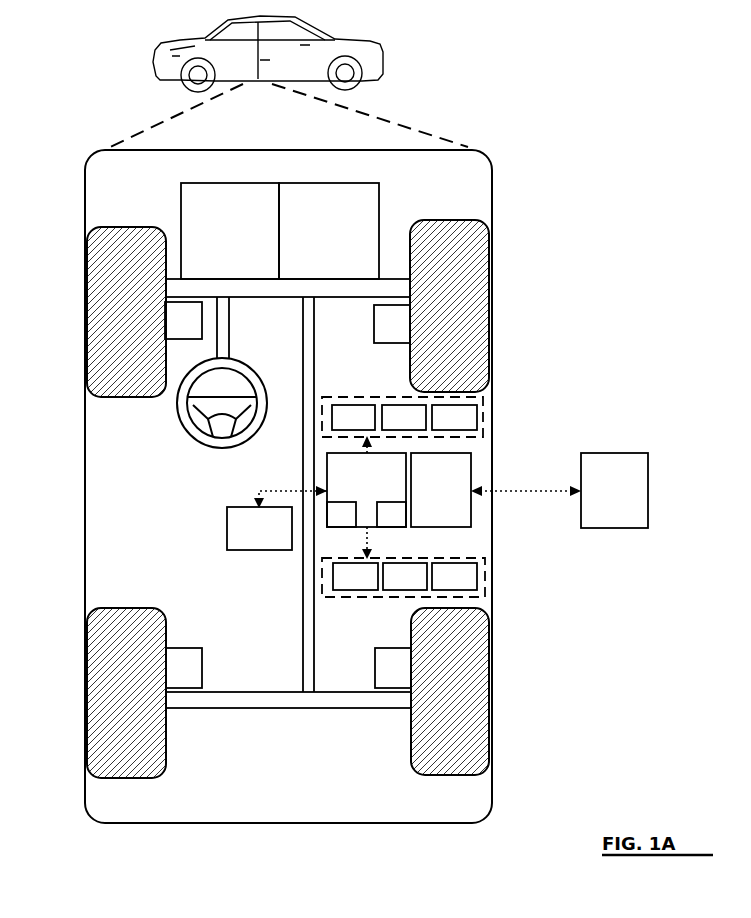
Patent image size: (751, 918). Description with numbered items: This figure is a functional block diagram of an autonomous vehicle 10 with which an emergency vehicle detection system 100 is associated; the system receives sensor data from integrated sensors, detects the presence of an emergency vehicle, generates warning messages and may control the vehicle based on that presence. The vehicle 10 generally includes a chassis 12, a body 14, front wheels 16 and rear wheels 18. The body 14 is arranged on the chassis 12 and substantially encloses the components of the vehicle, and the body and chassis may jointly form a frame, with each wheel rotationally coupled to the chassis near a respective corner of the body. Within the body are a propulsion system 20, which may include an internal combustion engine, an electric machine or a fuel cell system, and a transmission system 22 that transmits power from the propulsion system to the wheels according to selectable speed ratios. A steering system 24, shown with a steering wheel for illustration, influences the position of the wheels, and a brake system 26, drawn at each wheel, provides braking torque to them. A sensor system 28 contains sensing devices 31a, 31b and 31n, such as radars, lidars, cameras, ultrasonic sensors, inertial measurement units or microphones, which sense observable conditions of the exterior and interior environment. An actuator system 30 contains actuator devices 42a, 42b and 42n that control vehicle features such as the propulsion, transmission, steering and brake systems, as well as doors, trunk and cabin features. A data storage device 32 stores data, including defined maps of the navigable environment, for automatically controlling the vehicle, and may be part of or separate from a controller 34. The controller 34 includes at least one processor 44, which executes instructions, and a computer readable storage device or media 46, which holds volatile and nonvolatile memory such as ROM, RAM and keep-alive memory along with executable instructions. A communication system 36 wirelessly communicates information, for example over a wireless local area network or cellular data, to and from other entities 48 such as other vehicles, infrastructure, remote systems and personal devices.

The vehicle 10 is at (155, 66).
The emergency vehicle detection system 100 is at (508, 172).
The body 14 is at (85, 470).
The chassis 12 is at (303, 630).
The front wheels 16 is at (125, 227).
The rear wheels 18 is at (140, 778).
The propulsion system 20 is at (219, 241).
The transmission system 22 is at (318, 241).
The steering system 24 is at (243, 310).
The brake system 26 is at (172, 330).
The sensor system 28 is at (360, 375).
The sensing device 31a is at (367, 427).
The sensing device 31b is at (418, 427).
The sensing device 31n is at (468, 427).
The actuator system 30 is at (372, 598).
The actuator device 42a is at (369, 586).
The actuator device 42b is at (419, 586).
The actuator device 42n is at (468, 586).
The data storage device 32 is at (248, 538).
The controller 34 is at (355, 500).
The processor 44 is at (332, 524).
The computer readable storage device or media 46 is at (382, 524).
The communication system 36 is at (430, 500).
The other entities 48 is at (603, 500).